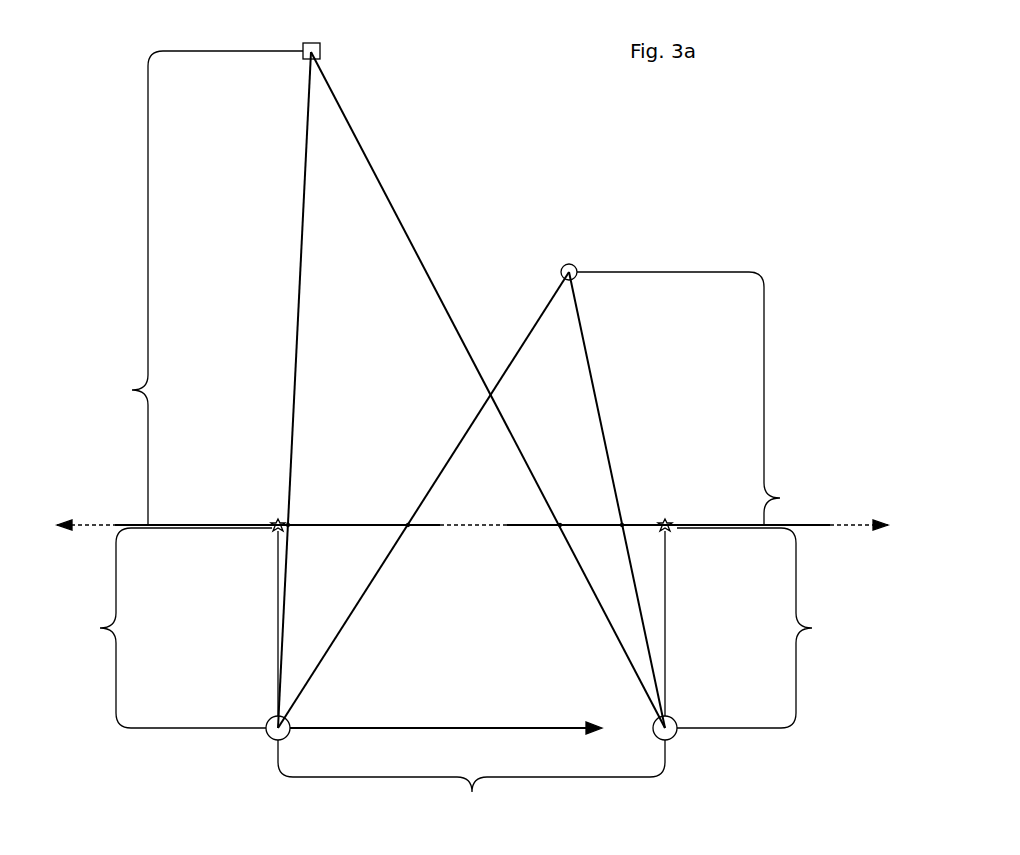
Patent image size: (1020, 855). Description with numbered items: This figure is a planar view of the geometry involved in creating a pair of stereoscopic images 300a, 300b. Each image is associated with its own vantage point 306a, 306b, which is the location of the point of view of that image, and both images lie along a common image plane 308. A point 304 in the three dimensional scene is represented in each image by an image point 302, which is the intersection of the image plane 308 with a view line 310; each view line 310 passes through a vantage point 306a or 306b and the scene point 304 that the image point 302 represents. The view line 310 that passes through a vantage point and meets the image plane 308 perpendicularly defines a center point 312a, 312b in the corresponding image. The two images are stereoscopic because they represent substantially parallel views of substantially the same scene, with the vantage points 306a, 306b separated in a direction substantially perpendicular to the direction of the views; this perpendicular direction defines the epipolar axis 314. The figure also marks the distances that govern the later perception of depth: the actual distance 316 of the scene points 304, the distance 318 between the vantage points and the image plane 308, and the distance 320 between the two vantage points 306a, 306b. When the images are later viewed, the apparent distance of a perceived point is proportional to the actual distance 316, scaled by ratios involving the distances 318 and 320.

The image 300a is at (433, 530).
The image 300b is at (508, 530).
The image point 302 is at (290, 523).
The point 304 is at (318, 45).
The vantage point 306a is at (272, 740).
The vantage point 306b is at (674, 740).
The image plane 308 is at (60, 522).
The view line 310 is at (303, 207).
The center point 312a is at (272, 522).
The center point 312b is at (671, 522).
The epipolar axis 314 is at (537, 726).
The actual distance 316 is at (455, 288).
The distance 318 is at (456, 628).
The distance 320 is at (471, 780).